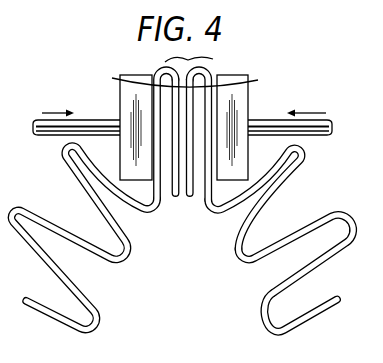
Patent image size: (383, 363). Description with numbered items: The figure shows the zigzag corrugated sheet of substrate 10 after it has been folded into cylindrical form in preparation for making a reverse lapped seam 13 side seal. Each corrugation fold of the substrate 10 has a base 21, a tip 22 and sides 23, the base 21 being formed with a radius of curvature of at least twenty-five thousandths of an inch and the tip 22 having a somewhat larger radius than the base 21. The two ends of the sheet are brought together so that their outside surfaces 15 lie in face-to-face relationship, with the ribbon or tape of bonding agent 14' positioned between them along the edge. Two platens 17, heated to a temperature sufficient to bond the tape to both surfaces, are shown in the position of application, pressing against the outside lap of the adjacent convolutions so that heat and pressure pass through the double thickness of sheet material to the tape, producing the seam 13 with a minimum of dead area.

The substrate 10 is at (194, 74).
The reverse lapped seam 13 is at (213, 59).
The inserted bar 14' is at (77, 97).
The outside surfaces 15 is at (174, 196).
The platens 17 is at (120, 101).
The base 21 is at (97, 306).
The tip 22 is at (306, 156).
The sides 23 is at (302, 276).